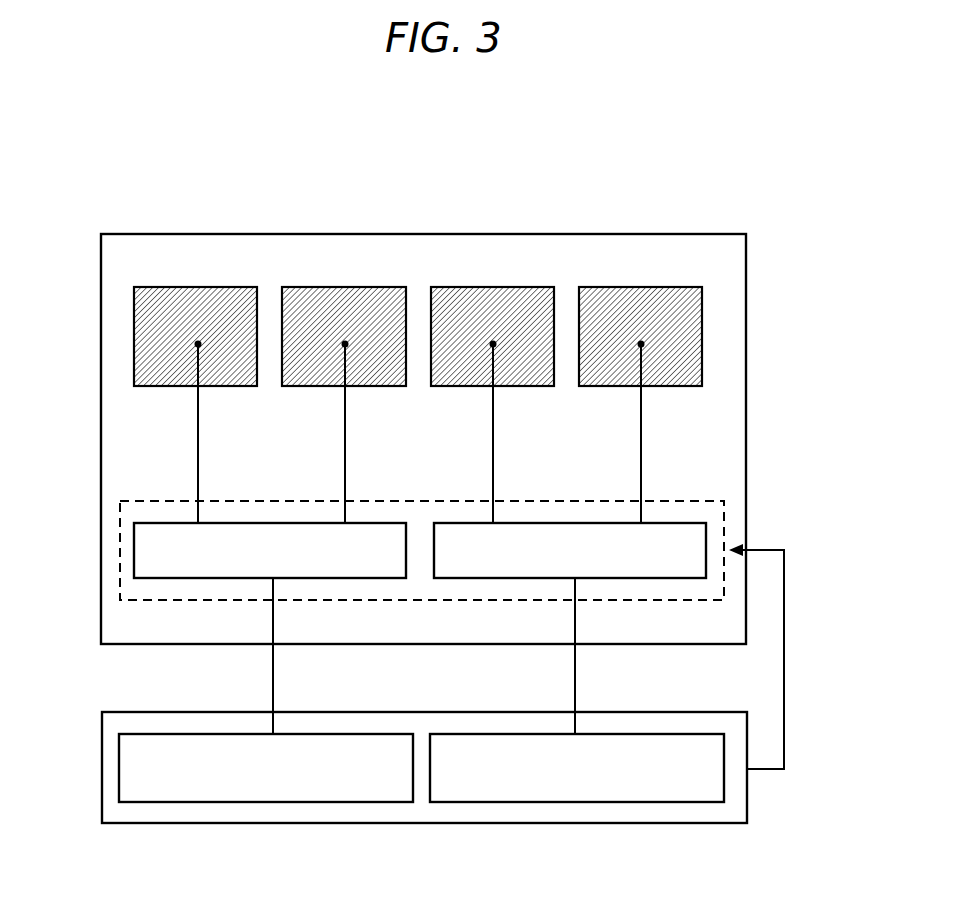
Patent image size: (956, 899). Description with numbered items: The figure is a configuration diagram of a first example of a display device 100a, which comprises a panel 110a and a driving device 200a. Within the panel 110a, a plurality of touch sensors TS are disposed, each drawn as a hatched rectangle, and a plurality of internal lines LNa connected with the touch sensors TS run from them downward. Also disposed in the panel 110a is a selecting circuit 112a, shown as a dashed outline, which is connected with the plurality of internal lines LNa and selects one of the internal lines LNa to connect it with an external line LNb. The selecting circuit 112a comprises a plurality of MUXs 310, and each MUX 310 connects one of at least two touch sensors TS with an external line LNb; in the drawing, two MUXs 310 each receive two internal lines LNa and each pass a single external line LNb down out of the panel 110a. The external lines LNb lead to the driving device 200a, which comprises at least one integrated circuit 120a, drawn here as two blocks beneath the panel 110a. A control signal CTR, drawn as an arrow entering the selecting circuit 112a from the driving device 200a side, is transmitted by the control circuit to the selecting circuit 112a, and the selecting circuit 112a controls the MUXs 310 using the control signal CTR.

The display device 100a is at (166, 149).
The panel 110a is at (412, 234).
The touch sensors TS is at (134, 300).
The internal lines LNa is at (198, 438).
The selecting circuit 112a is at (724, 513).
The MUX 310 is at (134, 547).
The external lines LNb is at (273, 692).
The control signal CTR is at (786, 656).
The driving device 200a is at (421, 823).
The integrated circuit 120a is at (280, 802).